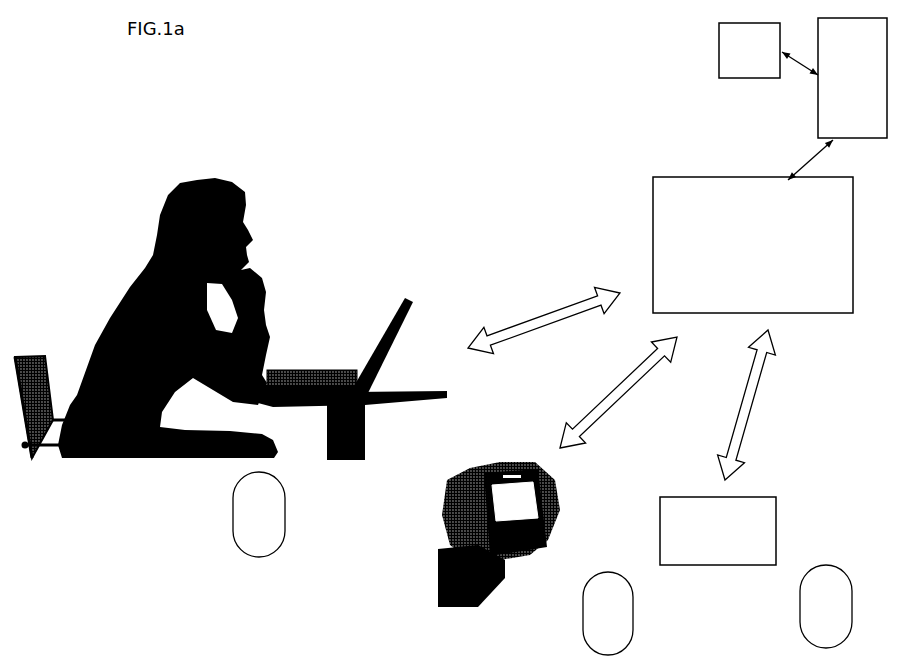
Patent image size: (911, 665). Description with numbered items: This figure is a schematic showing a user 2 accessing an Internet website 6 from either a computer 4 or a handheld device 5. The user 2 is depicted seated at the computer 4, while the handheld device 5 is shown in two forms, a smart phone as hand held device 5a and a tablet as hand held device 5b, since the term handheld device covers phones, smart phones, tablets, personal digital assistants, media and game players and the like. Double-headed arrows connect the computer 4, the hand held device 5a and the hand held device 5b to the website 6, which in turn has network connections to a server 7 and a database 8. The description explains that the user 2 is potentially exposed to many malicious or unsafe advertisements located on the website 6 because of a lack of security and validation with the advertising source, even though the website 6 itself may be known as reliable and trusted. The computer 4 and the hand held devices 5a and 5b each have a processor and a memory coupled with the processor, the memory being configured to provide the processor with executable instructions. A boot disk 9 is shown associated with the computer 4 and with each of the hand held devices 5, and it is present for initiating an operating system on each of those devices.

The user 2 is at (231, 319).
The computer 4 is at (337, 324).
The handheld device 5 is at (667, 410).
The hand held device 5a is at (492, 534).
The hand held device 5b is at (718, 531).
The website 6 is at (753, 245).
The server 7 is at (852, 78).
The database 8 is at (749, 50).
The boot disk 9 is at (310, 412).